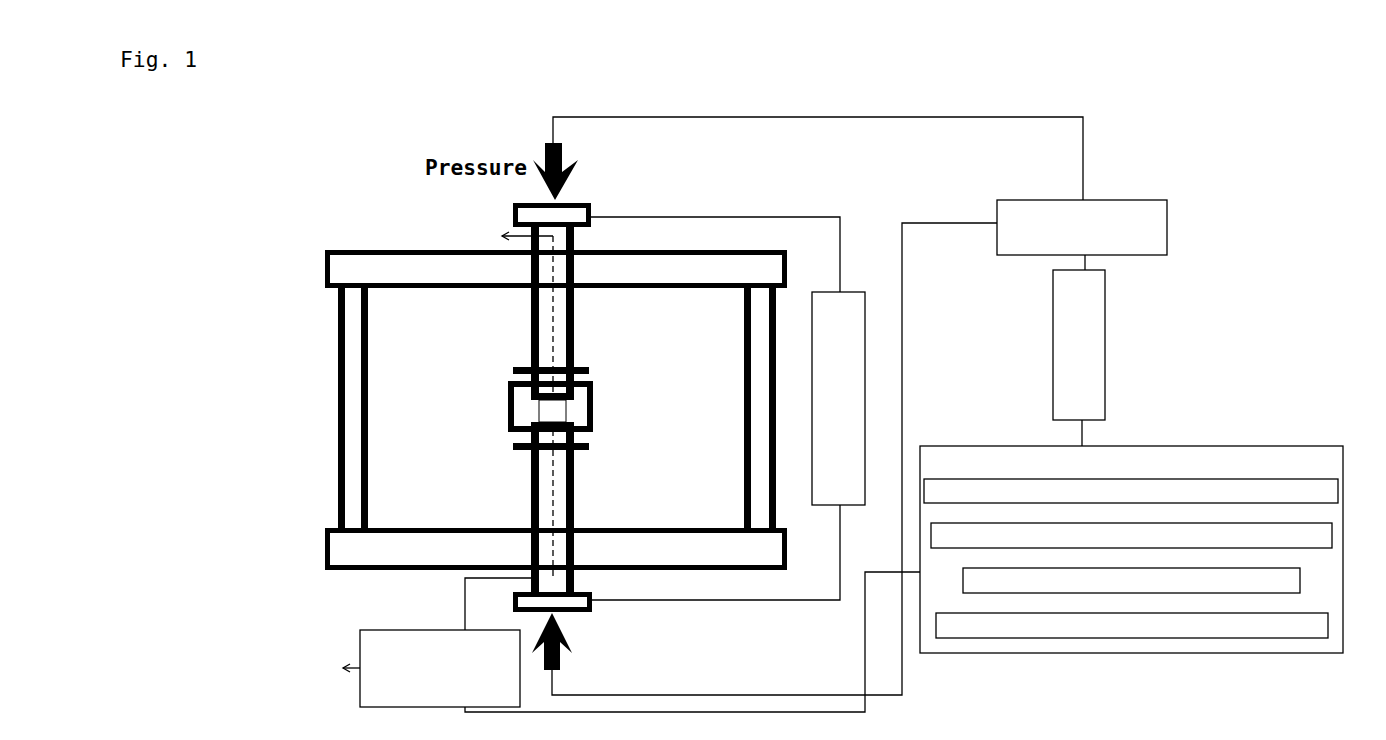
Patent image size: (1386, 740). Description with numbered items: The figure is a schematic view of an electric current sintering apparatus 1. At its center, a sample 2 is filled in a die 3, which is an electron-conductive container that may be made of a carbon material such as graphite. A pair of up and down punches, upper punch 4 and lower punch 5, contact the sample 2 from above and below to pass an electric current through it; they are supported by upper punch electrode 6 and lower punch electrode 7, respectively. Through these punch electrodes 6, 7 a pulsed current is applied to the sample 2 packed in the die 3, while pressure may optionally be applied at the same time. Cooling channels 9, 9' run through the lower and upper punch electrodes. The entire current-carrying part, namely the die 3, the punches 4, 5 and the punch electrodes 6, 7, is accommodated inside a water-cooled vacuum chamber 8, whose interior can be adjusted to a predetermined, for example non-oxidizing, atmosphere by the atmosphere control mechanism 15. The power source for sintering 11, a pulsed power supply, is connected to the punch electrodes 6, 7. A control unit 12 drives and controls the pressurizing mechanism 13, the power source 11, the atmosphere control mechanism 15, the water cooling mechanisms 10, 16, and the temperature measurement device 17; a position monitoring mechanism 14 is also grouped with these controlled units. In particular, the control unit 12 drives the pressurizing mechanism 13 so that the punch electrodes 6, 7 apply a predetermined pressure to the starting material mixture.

The electric current sintering apparatus 1 is at (463, 398).
The sample 2 is at (547, 407).
The die 3 is at (577, 402).
The upper punch 4 is at (555, 383).
The lower punch 5 is at (550, 428).
The upper punch electrode 6 is at (531, 350).
The lower punch electrode 7 is at (547, 467).
The water-cooled vacuum chamber 8 is at (350, 483).
The cooling channel 9 is at (470, 504).
The cooling channel 9' is at (465, 315).
The water cooling mechanism 10 is at (431, 668).
The power source for sintering 11 is at (838, 398).
The control unit 12 is at (1079, 345).
The pressurizing mechanism 13 is at (1082, 227).
The position monitoring mechanism 14 is at (1131, 490).
The atmosphere control mechanism 15 is at (1131, 535).
The water cooling mechanism 16 is at (1131, 580).
The temperature measurement device 17 is at (1132, 625).